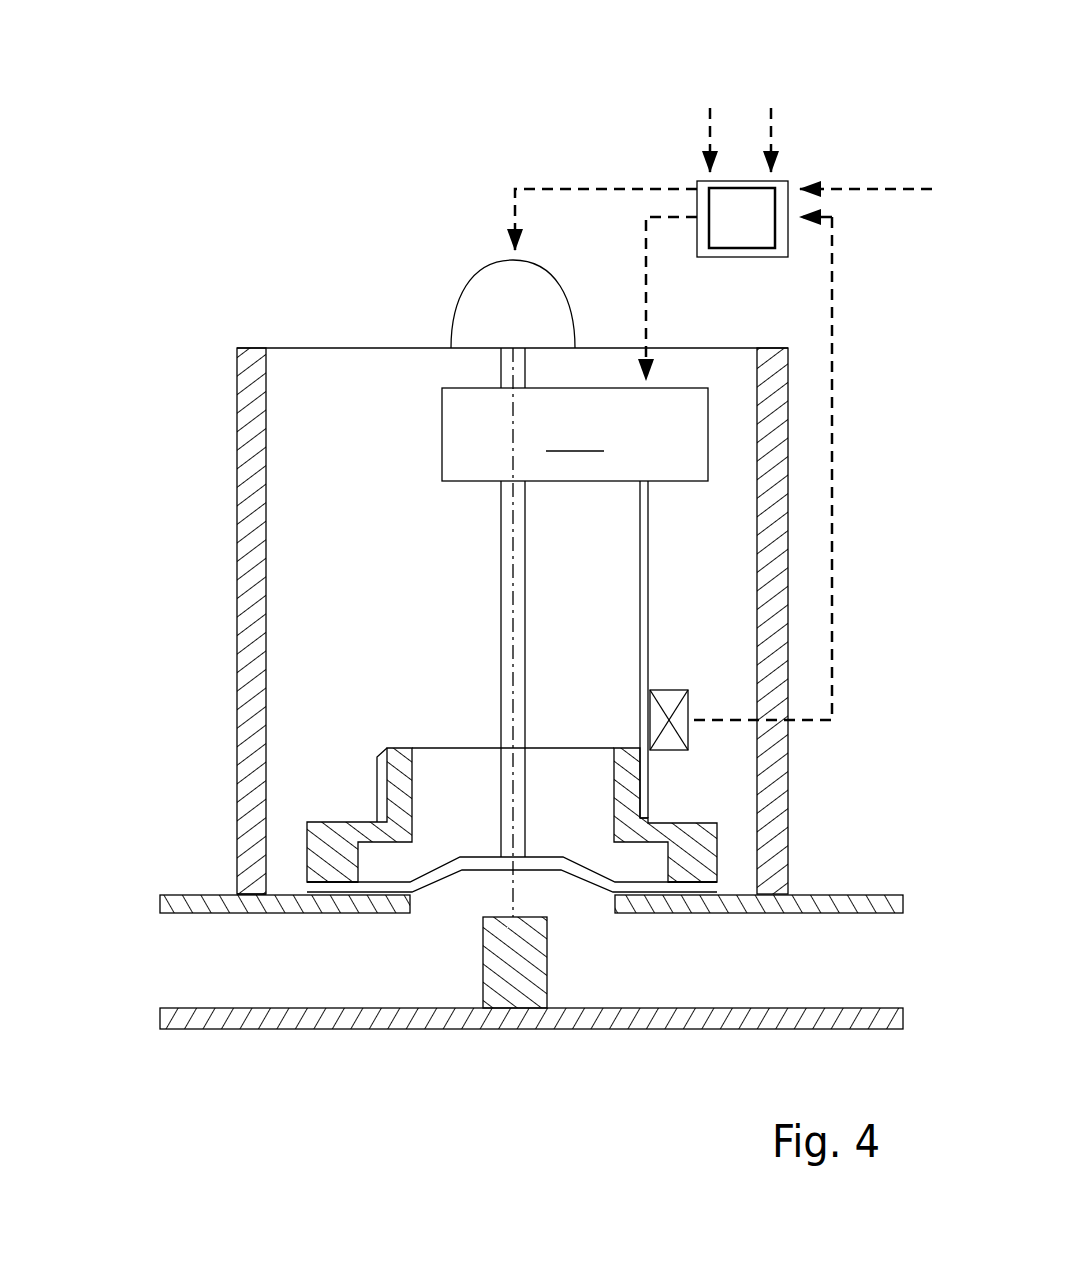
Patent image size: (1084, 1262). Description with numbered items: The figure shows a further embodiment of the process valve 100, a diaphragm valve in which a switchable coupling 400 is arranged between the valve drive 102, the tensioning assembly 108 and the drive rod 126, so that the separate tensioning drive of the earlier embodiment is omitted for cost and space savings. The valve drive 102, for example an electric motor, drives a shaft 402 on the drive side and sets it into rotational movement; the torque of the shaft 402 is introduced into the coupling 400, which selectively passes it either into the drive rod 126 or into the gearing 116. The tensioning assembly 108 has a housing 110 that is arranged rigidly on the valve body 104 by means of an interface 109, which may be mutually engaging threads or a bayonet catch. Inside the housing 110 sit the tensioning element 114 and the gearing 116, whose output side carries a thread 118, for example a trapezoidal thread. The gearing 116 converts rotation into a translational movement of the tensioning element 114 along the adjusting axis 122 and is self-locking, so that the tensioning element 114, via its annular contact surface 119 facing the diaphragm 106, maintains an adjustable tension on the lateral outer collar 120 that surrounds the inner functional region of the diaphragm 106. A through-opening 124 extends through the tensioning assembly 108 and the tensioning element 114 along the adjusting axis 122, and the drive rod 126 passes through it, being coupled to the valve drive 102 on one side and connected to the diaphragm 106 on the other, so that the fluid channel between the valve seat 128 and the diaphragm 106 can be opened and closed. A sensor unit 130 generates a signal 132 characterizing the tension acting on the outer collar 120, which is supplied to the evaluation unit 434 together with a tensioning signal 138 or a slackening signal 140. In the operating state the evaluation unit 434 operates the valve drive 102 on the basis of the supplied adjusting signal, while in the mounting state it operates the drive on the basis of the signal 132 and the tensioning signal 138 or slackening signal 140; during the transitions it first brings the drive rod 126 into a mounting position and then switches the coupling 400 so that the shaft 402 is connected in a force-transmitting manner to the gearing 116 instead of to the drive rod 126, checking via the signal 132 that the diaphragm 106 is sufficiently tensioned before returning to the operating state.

The process valve 100 is at (252, 51).
The valve drive 102 is at (452, 313).
The valve body 104 is at (182, 890).
The diaphragm 106 is at (330, 890).
The tensioning assembly 108 is at (585, 627).
The interface 109 is at (225, 880).
The housing 110 is at (252, 640).
The tensioning element 114 is at (640, 798).
The gearing 116 is at (648, 578).
The thread 118 is at (650, 775).
The annular contact surface 119 is at (717, 893).
The lateral outer collar 120 is at (688, 882).
The adjusting axis 122 is at (500, 512).
The through-opening 124 is at (440, 778).
The drive rod 126 is at (503, 700).
The valve seat 128 is at (547, 935).
The sensor unit 130 is at (688, 703).
The signal 132 is at (832, 453).
The tensioning signal 138 is at (773, 135).
The slackening signal 140 is at (713, 125).
The switchable coupling 400 is at (575, 434).
The shaft 402 is at (503, 378).
The evaluation unit 434 is at (788, 245).